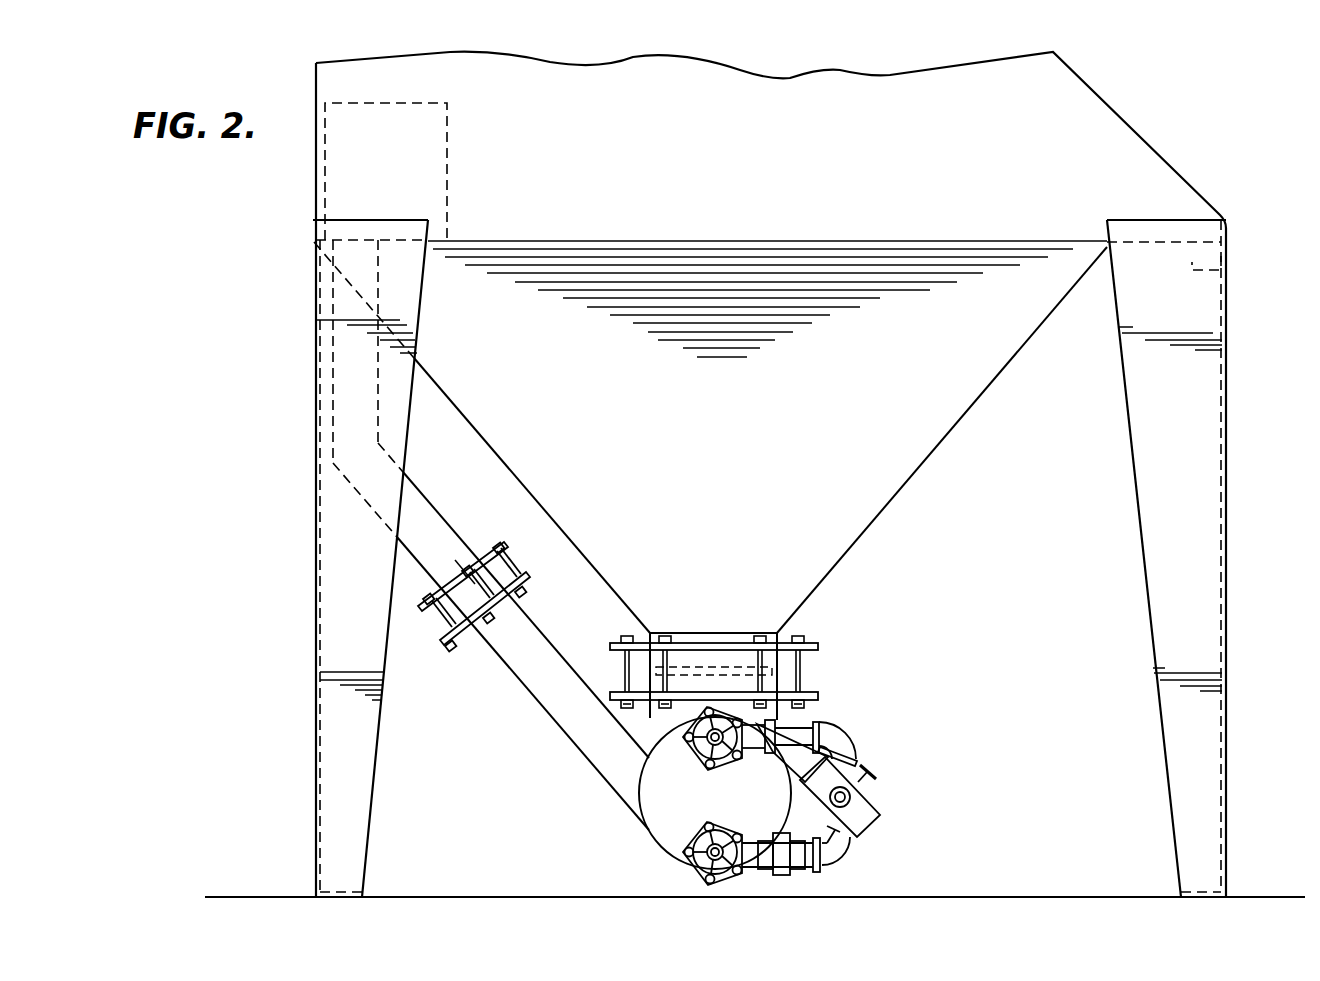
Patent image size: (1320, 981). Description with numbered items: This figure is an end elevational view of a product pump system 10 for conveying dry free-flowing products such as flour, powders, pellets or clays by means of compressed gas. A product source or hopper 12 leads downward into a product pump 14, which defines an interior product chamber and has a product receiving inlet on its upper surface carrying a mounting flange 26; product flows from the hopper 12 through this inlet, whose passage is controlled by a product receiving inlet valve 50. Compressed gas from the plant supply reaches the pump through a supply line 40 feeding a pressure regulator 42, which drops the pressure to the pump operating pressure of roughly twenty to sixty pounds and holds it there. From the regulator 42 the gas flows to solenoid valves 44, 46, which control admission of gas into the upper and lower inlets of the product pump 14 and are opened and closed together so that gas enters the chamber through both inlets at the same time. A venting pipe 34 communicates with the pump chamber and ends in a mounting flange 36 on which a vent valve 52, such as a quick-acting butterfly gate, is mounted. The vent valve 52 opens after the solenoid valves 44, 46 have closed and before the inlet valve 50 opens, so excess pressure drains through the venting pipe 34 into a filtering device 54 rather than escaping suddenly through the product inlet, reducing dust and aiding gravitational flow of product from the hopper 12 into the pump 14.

The product pump system 10 is at (1246, 487).
The hopper 12 is at (556, 521).
The product pump 14 is at (832, 713).
The mounting flange 26 is at (808, 699).
The venting pipe 34 is at (530, 678).
The mounting flange 36 is at (519, 594).
The supply line 40 is at (843, 817).
The pressure regulator 42 is at (861, 797).
The solenoid valve 44 is at (710, 756).
The solenoid valve 46 is at (697, 867).
The product receiving inlet valve 50 is at (702, 683).
The vent valve 52 is at (477, 590).
The filtering device 54 is at (396, 166).